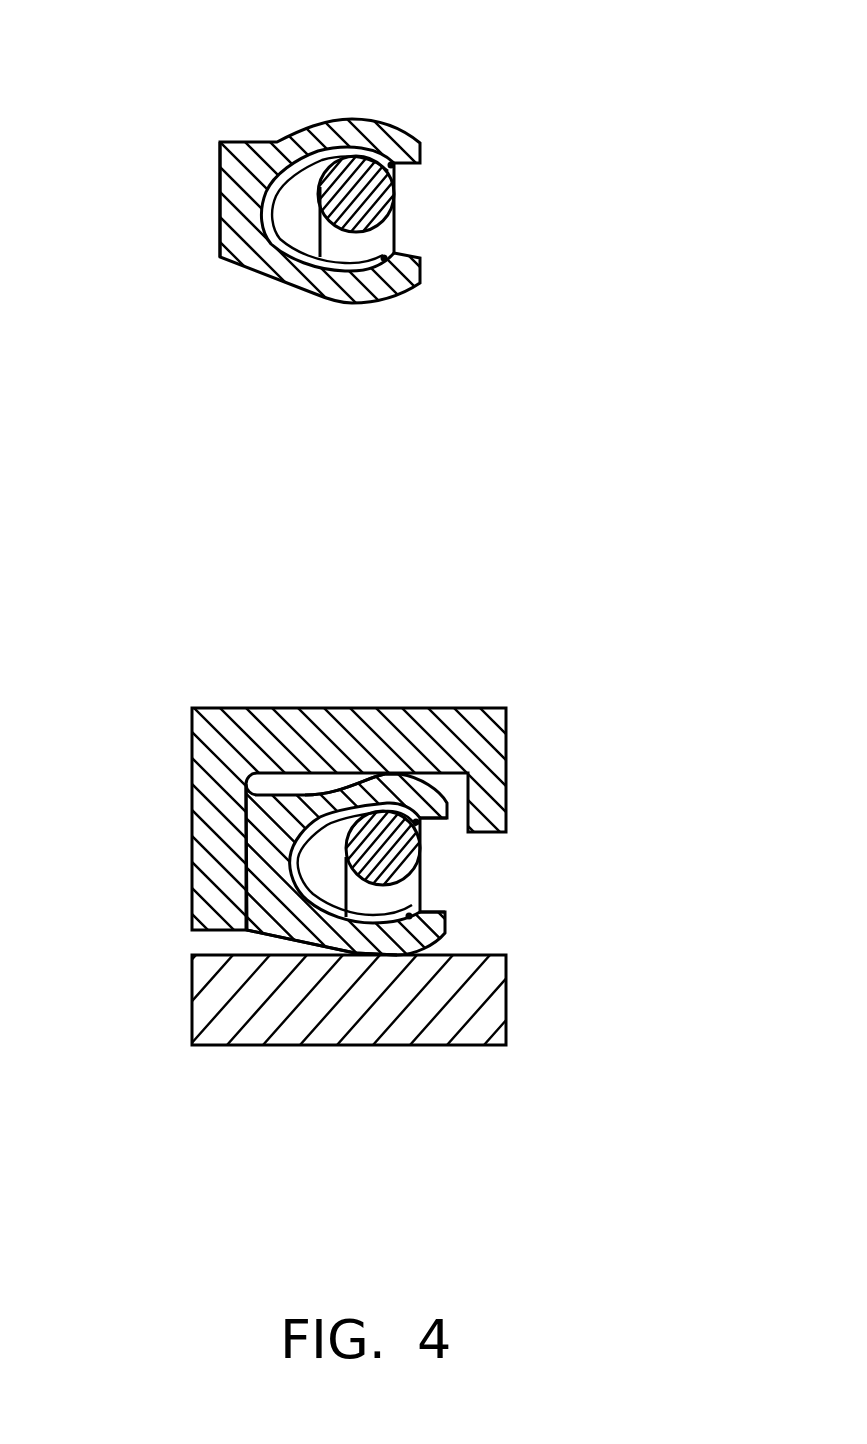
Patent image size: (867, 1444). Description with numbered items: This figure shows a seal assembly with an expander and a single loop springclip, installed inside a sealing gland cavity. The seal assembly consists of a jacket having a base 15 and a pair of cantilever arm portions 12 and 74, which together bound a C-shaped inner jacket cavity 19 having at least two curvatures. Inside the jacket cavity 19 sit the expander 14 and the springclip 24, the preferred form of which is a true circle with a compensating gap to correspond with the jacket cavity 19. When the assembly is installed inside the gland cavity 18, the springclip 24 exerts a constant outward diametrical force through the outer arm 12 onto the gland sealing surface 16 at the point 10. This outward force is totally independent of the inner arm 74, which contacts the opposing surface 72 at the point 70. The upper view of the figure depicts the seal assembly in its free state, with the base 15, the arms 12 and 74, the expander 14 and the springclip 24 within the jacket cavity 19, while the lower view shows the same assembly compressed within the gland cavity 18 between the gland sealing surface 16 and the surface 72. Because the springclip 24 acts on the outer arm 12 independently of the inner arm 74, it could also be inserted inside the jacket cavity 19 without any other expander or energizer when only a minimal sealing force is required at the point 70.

The point 10 is at (383, 775).
The cantilever arm portion 12 is at (338, 133).
The expander 14 is at (358, 257).
The base 15 is at (238, 203).
The gland sealing surface 16 is at (448, 772).
The gland cavity 18 is at (452, 852).
The inner jacket cavity 19 is at (292, 213).
The springclip 24 is at (366, 206).
The point 70 is at (380, 954).
The surface 72 is at (463, 953).
The cantilever arm portion 74 is at (320, 927).